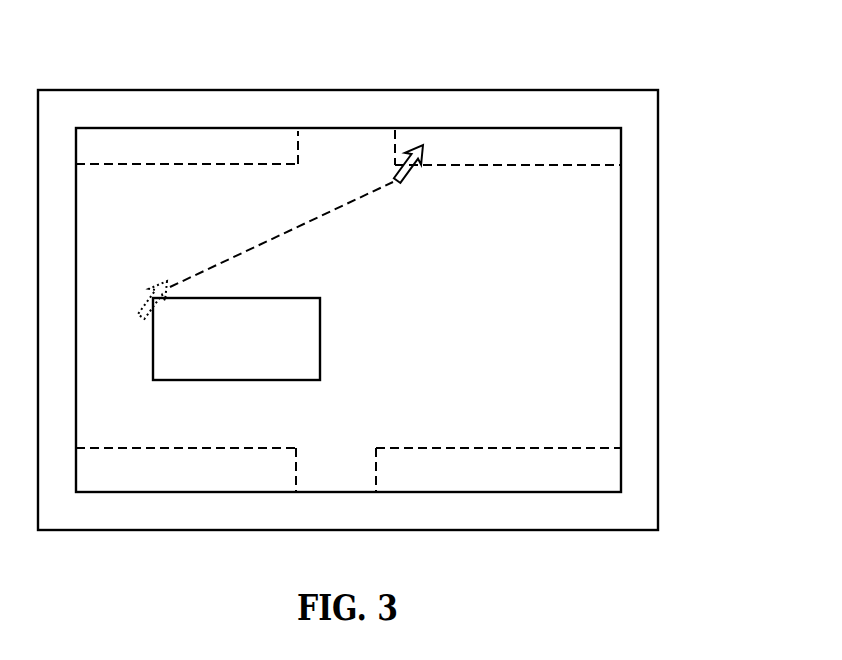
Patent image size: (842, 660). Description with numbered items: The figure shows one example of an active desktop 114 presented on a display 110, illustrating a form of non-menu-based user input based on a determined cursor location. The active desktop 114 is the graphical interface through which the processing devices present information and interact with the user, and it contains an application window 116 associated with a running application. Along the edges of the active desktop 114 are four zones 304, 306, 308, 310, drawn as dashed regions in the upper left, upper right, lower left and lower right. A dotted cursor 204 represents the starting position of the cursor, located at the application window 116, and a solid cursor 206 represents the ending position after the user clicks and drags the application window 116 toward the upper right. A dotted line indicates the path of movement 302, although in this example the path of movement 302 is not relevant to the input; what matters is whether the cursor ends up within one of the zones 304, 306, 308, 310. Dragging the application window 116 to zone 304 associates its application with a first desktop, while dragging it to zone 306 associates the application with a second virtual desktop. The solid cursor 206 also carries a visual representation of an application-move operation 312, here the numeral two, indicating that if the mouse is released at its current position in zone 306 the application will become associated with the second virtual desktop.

The display 110 is at (659, 420).
The active desktop 114 is at (592, 306).
The application window 116 is at (322, 330).
The dotted cursor 204 is at (138, 315).
The solid cursor 206 is at (400, 183).
The path of movement 302 is at (282, 233).
The zone 304 is at (188, 147).
The zone 306 is at (508, 147).
The zone 308 is at (185, 468).
The zone 310 is at (498, 465).
The visual representation of an application-move operation 312 is at (448, 147).